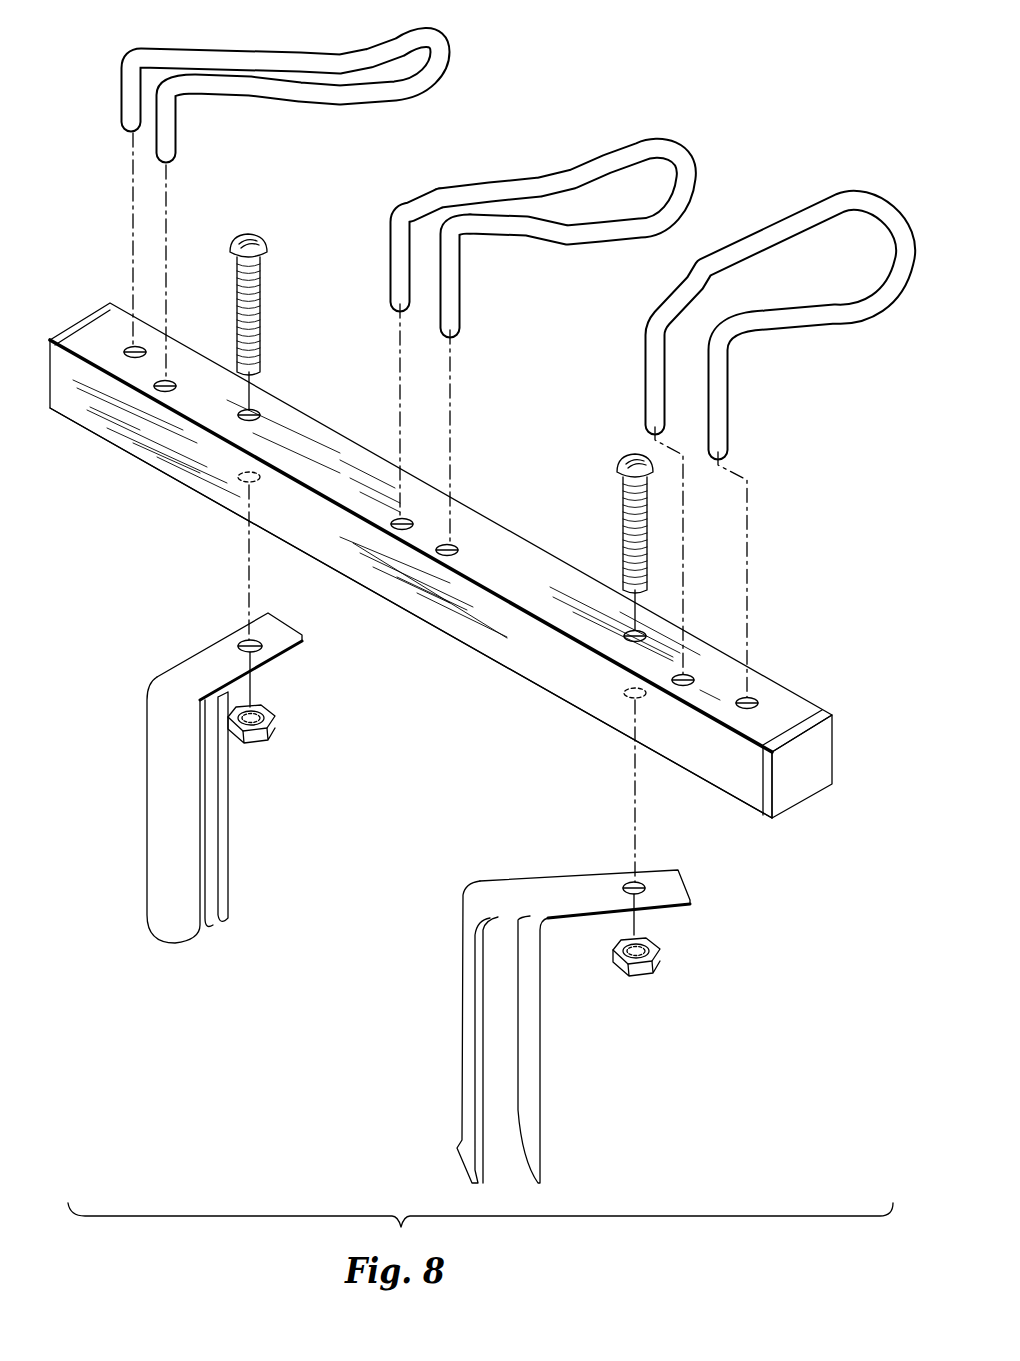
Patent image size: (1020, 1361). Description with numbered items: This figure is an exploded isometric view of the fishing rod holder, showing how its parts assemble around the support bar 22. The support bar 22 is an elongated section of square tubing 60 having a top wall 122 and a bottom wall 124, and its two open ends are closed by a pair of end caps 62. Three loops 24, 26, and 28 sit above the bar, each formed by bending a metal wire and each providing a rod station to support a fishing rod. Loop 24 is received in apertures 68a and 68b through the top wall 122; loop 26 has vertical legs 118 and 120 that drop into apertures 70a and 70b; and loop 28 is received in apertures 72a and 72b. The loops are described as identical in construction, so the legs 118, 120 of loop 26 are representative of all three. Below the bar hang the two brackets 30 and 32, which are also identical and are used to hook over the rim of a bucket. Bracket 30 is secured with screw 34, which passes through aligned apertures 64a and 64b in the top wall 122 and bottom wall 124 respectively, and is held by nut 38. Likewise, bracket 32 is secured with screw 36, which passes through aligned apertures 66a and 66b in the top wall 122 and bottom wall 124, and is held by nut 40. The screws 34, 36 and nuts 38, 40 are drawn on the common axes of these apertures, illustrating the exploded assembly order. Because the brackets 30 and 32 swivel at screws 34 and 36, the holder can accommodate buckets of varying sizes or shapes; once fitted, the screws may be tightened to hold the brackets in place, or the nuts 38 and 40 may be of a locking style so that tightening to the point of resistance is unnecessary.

The support bar 22 is at (476, 525).
The loop 24 is at (437, 50).
The loop 26 is at (491, 206).
The loop 28 is at (878, 205).
The bracket 30 is at (160, 895).
The bracket 32 is at (536, 1125).
The screw 34 is at (232, 245).
The screw 36 is at (622, 458).
The nut 38 is at (272, 738).
The nut 40 is at (657, 965).
The square tubing 60 is at (422, 598).
The end caps 62 is at (62, 325).
The aperture 64a is at (255, 405).
The aperture 64b is at (235, 475).
The aperture 66a is at (640, 628).
The aperture 66b is at (620, 690).
The aperture 68a is at (118, 343).
The aperture 68b is at (150, 377).
The aperture 70a is at (405, 515).
The aperture 70b is at (450, 540).
The aperture 72a is at (690, 675).
The aperture 72b is at (755, 697).
The vertical leg 118 is at (393, 256).
The vertical leg 120 is at (455, 302).
The top wall 122 is at (505, 555).
The bottom wall 124 is at (487, 650).